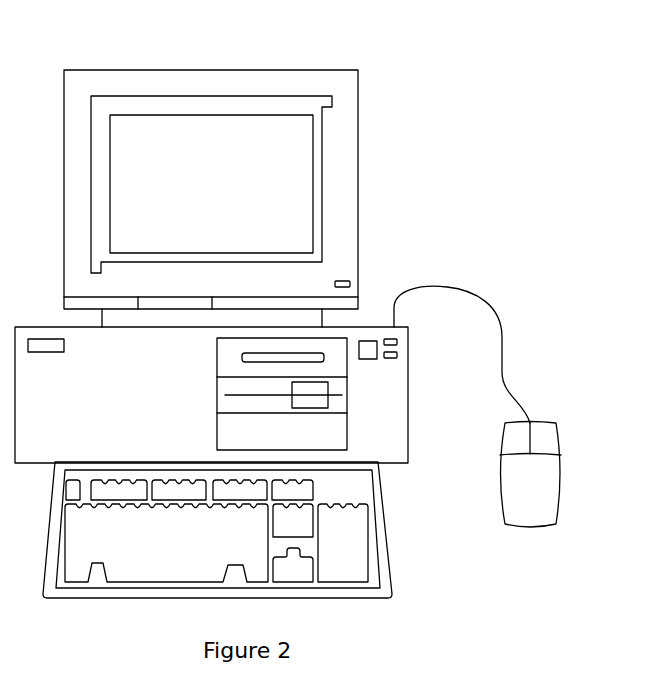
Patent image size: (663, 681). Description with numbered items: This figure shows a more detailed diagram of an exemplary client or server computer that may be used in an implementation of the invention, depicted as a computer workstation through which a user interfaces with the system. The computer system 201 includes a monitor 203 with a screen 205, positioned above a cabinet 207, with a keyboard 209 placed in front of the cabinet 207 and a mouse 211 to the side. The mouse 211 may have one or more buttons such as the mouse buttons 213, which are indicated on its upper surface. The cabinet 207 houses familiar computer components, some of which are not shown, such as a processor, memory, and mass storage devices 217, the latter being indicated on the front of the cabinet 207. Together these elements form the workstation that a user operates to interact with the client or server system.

The computer system 201 is at (376, 50).
The monitor 203 is at (358, 168).
The display screen 205 is at (236, 178).
The system unit 207 is at (120, 393).
The keyboard 209 is at (199, 553).
The mouse 211 is at (552, 496).
The mouse cable 213 is at (536, 432).
The disk drive 217 is at (337, 347).